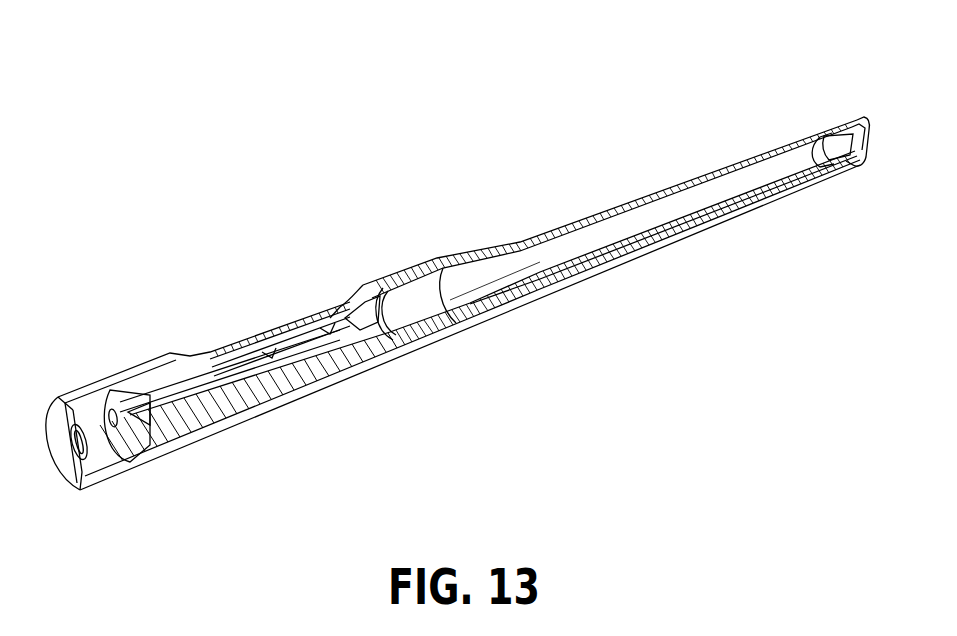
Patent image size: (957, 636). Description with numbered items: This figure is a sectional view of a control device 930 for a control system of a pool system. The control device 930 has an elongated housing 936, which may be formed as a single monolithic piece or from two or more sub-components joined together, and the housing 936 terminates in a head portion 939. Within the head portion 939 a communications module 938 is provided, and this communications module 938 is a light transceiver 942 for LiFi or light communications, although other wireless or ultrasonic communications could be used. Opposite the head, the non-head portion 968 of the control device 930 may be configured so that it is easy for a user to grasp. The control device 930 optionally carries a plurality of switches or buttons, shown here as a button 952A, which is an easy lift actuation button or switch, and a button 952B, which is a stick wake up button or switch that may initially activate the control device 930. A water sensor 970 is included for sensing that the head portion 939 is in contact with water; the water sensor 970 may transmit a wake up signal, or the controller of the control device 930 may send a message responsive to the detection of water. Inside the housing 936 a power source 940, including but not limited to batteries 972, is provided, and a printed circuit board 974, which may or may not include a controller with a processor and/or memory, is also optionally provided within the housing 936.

The control device 930 is at (267, 118).
The elongated housing 936 is at (530, 257).
The communications module 938 is at (853, 165).
The head portion 939 is at (837, 150).
The power source 940 is at (181, 433).
The light transceiver 942 is at (853, 123).
The button 952A is at (270, 350).
The button 952B is at (327, 327).
The non-head portion 968 is at (110, 392).
The water sensor 970 is at (817, 142).
The batteries 972 is at (227, 412).
The printed circuit board 974 is at (210, 395).